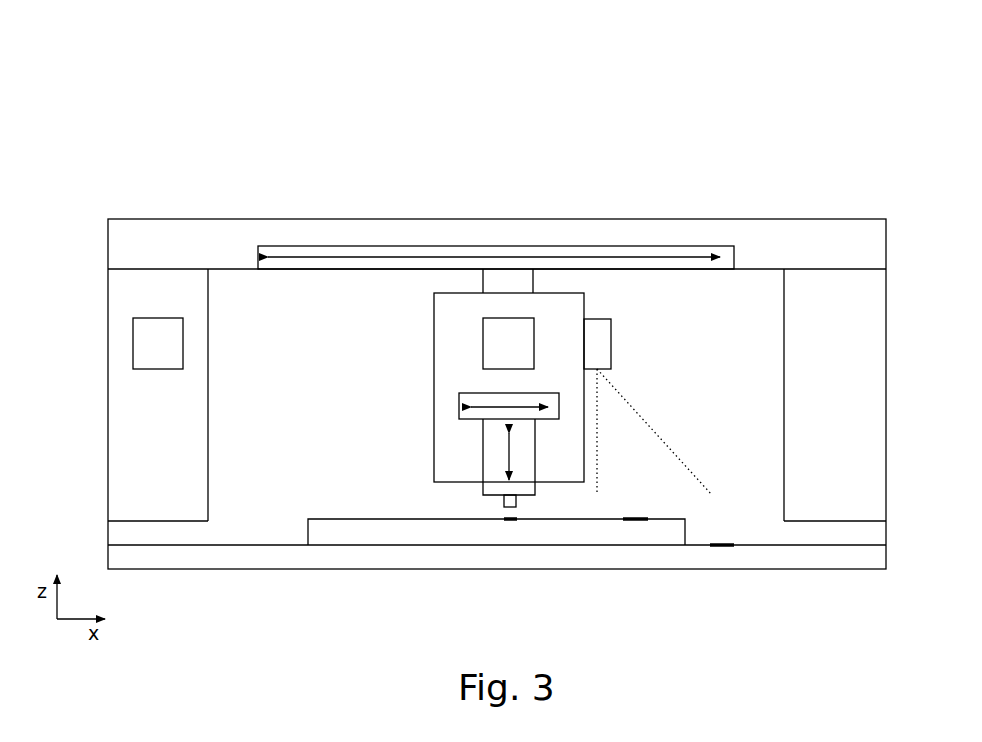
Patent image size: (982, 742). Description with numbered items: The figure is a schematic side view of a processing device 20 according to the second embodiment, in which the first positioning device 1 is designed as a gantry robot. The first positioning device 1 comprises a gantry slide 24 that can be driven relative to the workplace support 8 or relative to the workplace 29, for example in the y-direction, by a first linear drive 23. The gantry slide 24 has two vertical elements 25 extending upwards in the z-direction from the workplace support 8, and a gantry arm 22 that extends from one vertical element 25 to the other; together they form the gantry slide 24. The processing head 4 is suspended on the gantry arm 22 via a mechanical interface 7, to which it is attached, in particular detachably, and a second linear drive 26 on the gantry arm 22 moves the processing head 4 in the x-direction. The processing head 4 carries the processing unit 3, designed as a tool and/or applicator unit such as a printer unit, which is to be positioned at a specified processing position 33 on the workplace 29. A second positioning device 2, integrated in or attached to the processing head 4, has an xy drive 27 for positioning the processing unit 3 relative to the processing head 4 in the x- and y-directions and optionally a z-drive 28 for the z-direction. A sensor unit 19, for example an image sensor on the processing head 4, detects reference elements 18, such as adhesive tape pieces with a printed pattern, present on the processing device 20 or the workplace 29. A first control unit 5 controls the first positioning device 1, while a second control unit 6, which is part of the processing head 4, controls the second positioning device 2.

The first positioning device 1 is at (76, 226).
The second positioning device 2 is at (470, 434).
The processing unit 3 is at (503, 503).
The processing head 4 is at (440, 357).
The first control unit 5 is at (155, 343).
The second control unit 6 is at (508, 343).
The mechanical interface 7 is at (515, 280).
The workplace support 8 is at (876, 558).
The reference element 18 is at (636, 519).
The sensor unit 19 is at (600, 340).
The processing device 20 is at (802, 110).
The gantry arm 22 is at (200, 230).
The first linear drive 23 is at (120, 530).
The gantry slide 24 is at (88, 358).
The vertical elements 25 is at (118, 437).
The second linear drive 26 is at (425, 255).
The xy drive 27 is at (548, 397).
The z-drive 28 is at (530, 474).
The workplace 29 is at (355, 525).
The processing position 33 is at (511, 522).